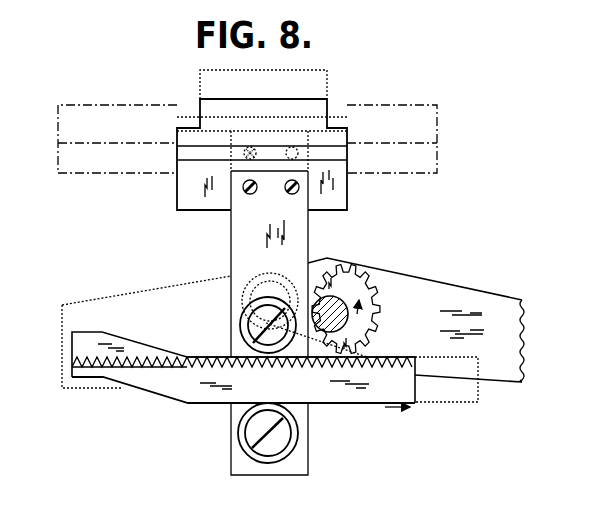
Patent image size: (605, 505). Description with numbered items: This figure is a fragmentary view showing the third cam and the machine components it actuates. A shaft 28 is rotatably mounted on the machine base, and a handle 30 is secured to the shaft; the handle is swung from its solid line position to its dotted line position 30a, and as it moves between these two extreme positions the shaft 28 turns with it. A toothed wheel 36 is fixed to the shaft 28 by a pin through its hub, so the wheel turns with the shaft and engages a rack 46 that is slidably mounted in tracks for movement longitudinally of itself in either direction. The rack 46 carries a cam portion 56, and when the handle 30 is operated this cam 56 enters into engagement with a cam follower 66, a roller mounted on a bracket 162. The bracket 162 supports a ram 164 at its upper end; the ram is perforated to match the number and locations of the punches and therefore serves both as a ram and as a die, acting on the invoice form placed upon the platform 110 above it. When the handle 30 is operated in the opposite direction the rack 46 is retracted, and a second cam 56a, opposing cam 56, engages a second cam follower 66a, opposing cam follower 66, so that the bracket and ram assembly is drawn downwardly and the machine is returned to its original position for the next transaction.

The platform 110 is at (437, 121).
The ram 164 is at (338, 190).
The bracket 162 is at (231, 238).
The handle 30 is at (510, 342).
The dotted line position of the handle 30a is at (93, 303).
The toothed wheel 36 is at (370, 298).
The shaft 28 is at (348, 322).
The cam portion 56 is at (145, 350).
The second cam 56a is at (157, 394).
The rack 46 is at (72, 366).
The cam follower 66 is at (279, 353).
The second cam follower 66a is at (292, 440).